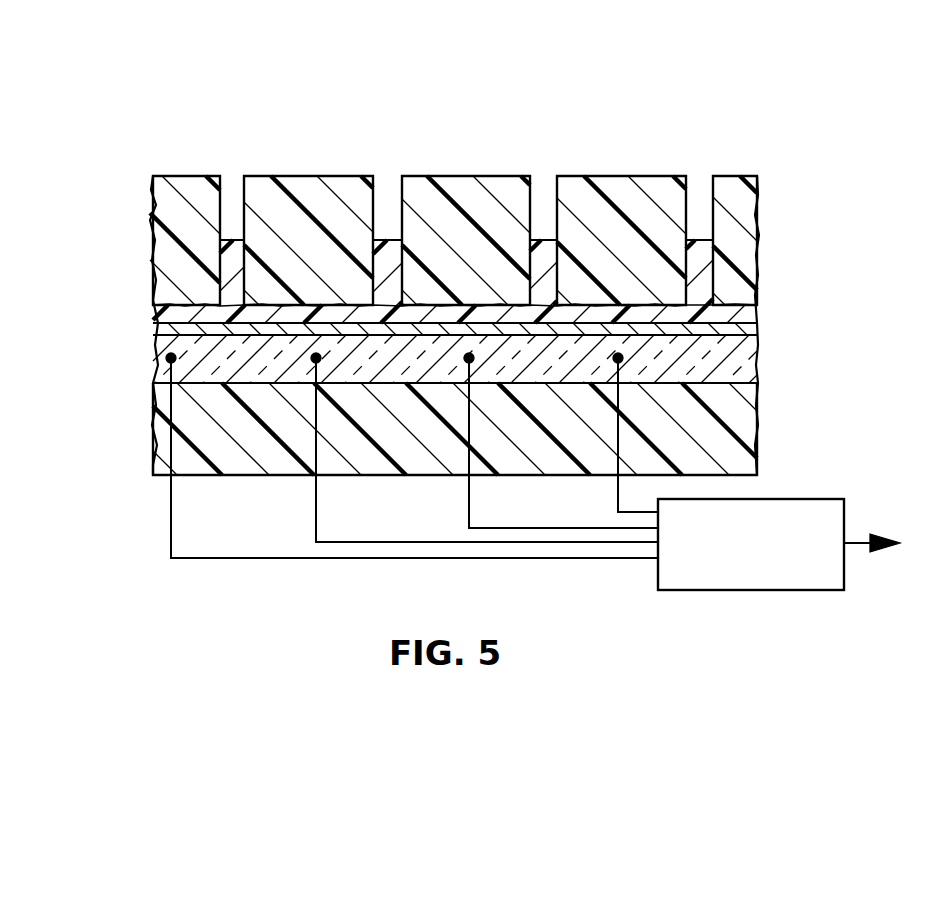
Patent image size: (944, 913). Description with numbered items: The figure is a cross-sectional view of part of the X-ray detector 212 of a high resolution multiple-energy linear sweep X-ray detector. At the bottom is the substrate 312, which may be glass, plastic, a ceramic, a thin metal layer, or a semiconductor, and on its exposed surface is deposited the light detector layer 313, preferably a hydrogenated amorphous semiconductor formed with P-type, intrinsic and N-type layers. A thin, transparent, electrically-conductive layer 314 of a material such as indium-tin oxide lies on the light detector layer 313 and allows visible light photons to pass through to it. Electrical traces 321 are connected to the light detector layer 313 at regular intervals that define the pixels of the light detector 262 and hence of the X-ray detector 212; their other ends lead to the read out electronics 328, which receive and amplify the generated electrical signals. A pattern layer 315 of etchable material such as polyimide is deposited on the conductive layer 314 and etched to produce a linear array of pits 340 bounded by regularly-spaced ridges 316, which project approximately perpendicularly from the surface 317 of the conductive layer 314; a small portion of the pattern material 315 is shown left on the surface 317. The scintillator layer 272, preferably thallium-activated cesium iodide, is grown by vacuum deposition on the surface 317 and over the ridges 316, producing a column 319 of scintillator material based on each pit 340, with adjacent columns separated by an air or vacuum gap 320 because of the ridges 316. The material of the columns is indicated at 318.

The X-ray detector 212 is at (428, 100).
The scintillator layer 272 is at (83, 175).
The light detector 262 is at (83, 323).
The pits 340 is at (470, 304).
The column of scintillator material 319 is at (164, 176).
The air or vacuum gap 320 is at (224, 176).
The ridges 316 is at (232, 240).
The detector material 318 is at (757, 228).
The pattern layer 315 is at (757, 316).
The transparent electrically-conductive layer 314 is at (757, 330).
The surface of the conductive layer 317 is at (158, 328).
The light detector layer 313 is at (757, 374).
The substrate 312 is at (757, 440).
The electrical traces 321 is at (170, 504).
The read out electronics 328 is at (658, 578).